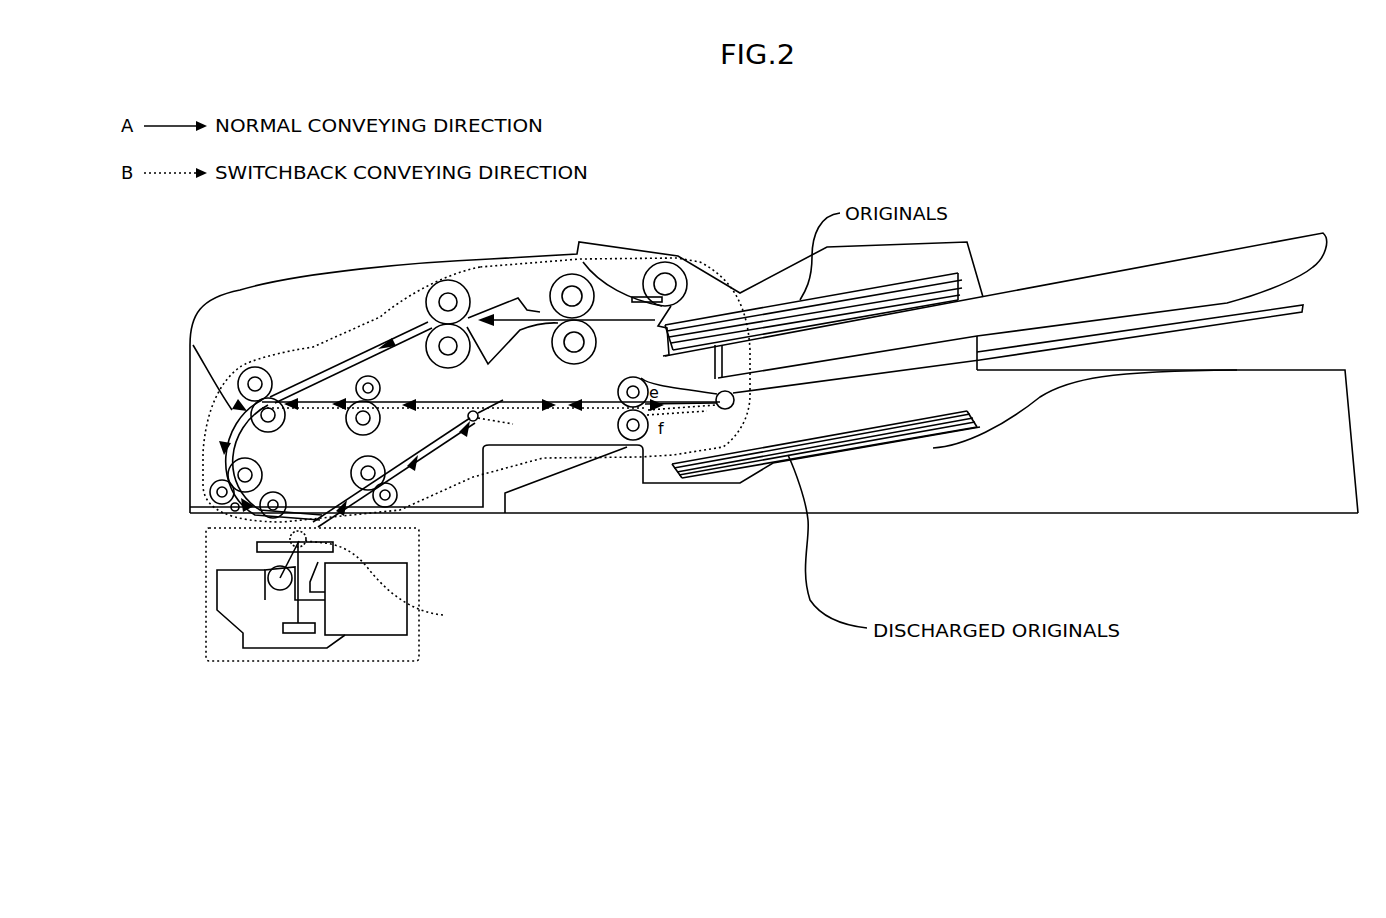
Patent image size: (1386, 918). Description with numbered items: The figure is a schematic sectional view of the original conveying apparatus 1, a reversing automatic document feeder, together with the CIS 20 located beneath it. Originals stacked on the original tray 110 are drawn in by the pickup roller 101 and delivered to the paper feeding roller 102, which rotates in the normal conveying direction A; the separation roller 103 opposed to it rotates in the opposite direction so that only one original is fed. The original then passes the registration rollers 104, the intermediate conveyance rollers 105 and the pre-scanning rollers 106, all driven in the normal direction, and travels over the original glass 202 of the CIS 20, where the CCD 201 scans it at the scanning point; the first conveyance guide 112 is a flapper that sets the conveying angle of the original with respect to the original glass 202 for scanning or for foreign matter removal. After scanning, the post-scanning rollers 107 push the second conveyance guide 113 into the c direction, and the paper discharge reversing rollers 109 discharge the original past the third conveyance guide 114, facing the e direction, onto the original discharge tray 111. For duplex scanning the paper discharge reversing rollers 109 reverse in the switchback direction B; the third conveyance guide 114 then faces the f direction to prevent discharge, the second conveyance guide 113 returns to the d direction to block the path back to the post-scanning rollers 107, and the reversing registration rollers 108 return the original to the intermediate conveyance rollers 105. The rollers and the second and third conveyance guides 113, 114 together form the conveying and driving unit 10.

The original conveying apparatus 1 is at (1082, 267).
The conveying and driving unit 10 is at (620, 456).
The CIS 20 is at (382, 653).
The pickup roller 101 is at (684, 264).
The paper feeding roller 102 is at (592, 272).
The separation roller 103 is at (555, 323).
The registration rollers 104 is at (425, 347).
The intermediate conveyance rollers 105 is at (236, 388).
The pre-scanning rollers 106 is at (210, 492).
The post-scanning rollers 107 is at (350, 473).
The reversing registration rollers 108 is at (356, 382).
The paper discharge reversing rollers 109 is at (618, 420).
The original tray 110 is at (1003, 292).
The original discharge tray 111 is at (933, 448).
The first conveyance guide 112 is at (231, 508).
The second conveyance guide 113 is at (482, 402).
The third conveyance guide 114 is at (722, 409).
The CCD 201 is at (300, 634).
The original glass 202 is at (257, 547).